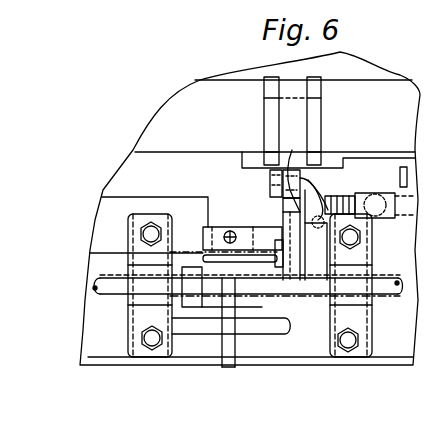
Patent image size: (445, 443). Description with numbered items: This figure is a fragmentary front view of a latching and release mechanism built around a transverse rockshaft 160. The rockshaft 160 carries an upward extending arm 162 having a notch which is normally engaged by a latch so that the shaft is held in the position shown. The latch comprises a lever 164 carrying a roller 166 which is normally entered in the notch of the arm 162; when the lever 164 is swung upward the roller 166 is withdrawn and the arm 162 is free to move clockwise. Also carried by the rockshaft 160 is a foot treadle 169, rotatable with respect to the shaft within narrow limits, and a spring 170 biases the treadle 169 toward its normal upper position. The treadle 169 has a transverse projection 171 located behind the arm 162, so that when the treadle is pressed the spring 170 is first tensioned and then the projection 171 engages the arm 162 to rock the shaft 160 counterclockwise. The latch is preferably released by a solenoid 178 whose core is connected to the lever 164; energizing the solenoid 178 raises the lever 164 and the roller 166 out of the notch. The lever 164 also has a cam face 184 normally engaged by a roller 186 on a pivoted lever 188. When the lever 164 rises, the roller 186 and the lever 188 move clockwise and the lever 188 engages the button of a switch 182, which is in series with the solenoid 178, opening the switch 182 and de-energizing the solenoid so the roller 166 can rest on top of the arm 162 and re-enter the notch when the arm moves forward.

The rockshaft 160 is at (398, 283).
The arm 162 is at (293, 218).
The lever 164 is at (285, 183).
The roller 166 is at (282, 210).
The foot treadle 169 is at (262, 305).
The spring 170 is at (218, 225).
The transverse projection 171 is at (320, 251).
The solenoid 178 is at (295, 115).
The switch 182 is at (356, 196).
The cam face 184 is at (290, 173).
The roller 186 is at (316, 180).
The pivoted lever 188 is at (327, 193).